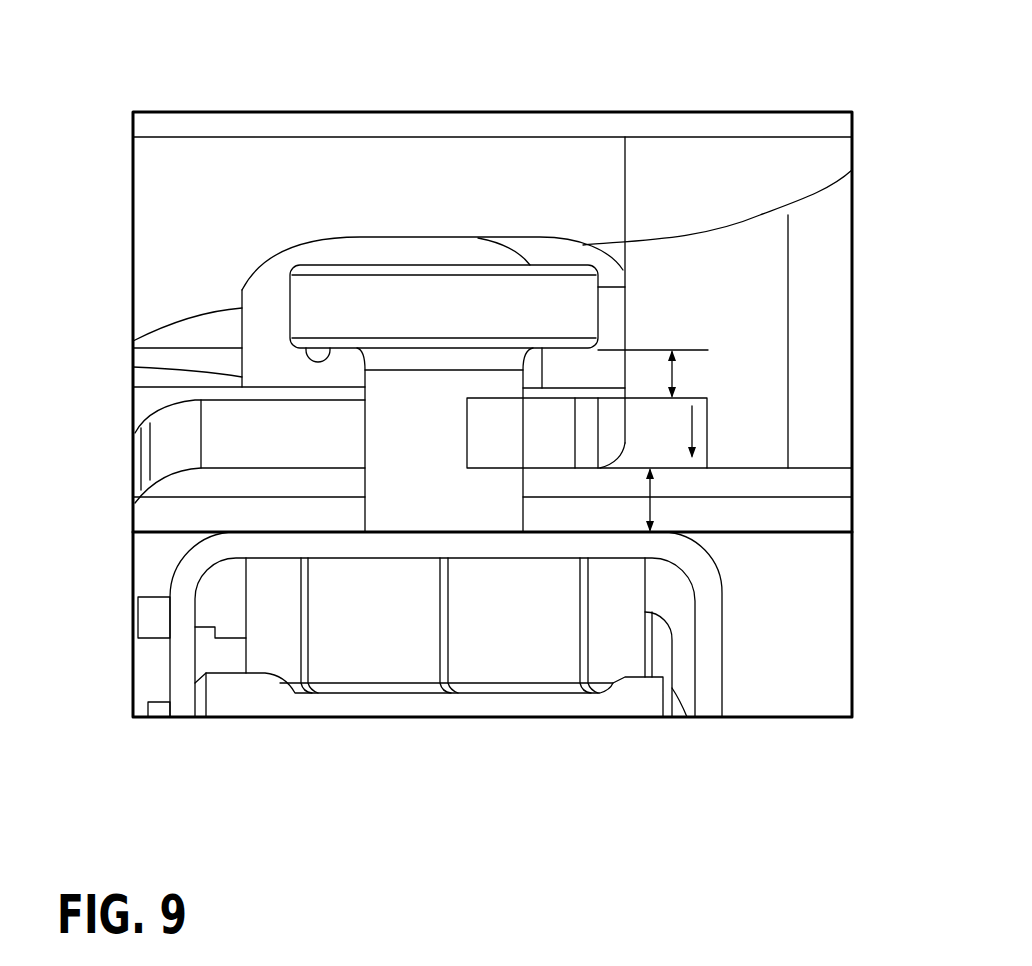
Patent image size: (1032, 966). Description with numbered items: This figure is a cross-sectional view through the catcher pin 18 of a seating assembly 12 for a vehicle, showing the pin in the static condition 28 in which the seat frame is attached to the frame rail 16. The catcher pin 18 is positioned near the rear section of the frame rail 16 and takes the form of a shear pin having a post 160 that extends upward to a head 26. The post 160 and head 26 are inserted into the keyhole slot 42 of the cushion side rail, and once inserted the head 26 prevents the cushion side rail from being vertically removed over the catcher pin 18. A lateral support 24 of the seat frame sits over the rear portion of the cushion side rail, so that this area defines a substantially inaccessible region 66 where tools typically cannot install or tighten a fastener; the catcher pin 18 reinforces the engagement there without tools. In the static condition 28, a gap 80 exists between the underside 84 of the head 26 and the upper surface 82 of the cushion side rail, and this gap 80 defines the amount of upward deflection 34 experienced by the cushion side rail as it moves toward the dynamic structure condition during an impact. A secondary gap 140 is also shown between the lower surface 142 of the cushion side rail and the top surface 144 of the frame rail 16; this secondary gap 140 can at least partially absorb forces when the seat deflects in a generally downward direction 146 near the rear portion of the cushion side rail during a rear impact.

The seating assembly 12 is at (195, 251).
The lateral support 24 is at (308, 127).
The head 26 is at (433, 297).
The substantially inaccessible region 66 is at (340, 205).
The catcher pin 18 is at (280, 303).
The underside 84 is at (333, 350).
The static condition 28 is at (112, 428).
The post 160 is at (393, 497).
The upper surface 82 is at (490, 397).
The upward deflection 34 is at (503, 410).
The frame rail 16 is at (175, 556).
The slot 42 is at (285, 440).
The lower surface 142 is at (483, 470).
The top surface 144 is at (540, 527).
The gap 80 is at (672, 372).
The downward direction 146 is at (692, 427).
The secondary gap 140 is at (653, 505).